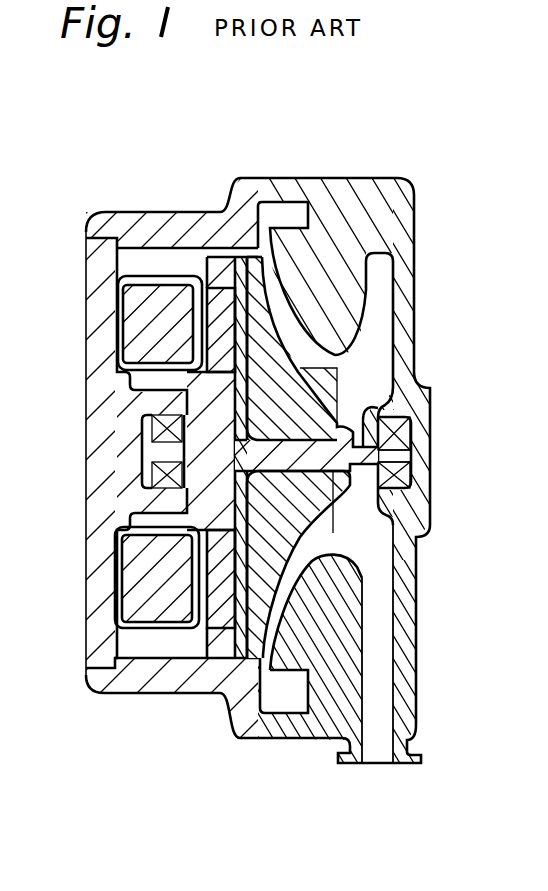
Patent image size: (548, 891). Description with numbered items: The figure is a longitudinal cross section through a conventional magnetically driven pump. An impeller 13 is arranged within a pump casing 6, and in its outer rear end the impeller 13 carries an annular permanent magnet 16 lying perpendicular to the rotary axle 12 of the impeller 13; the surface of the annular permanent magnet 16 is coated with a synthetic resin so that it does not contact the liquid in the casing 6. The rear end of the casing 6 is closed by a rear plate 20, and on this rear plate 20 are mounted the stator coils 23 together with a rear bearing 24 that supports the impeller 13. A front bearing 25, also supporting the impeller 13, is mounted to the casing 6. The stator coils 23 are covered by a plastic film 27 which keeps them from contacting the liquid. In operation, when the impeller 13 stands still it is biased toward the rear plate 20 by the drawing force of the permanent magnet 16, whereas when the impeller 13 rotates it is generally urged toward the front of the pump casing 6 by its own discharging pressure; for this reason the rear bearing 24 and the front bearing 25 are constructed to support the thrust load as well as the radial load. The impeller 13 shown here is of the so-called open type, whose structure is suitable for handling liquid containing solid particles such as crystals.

The pump casing 6 is at (416, 285).
The rotary axle 12 is at (366, 413).
The impeller 13 is at (310, 497).
The annular permanent magnet 16 is at (217, 293).
The rear plate 20 is at (90, 563).
The stator coils 23 is at (133, 340).
The rear bearing 24 is at (140, 473).
The front bearing 25 is at (403, 477).
The plastic film 27 is at (130, 284).